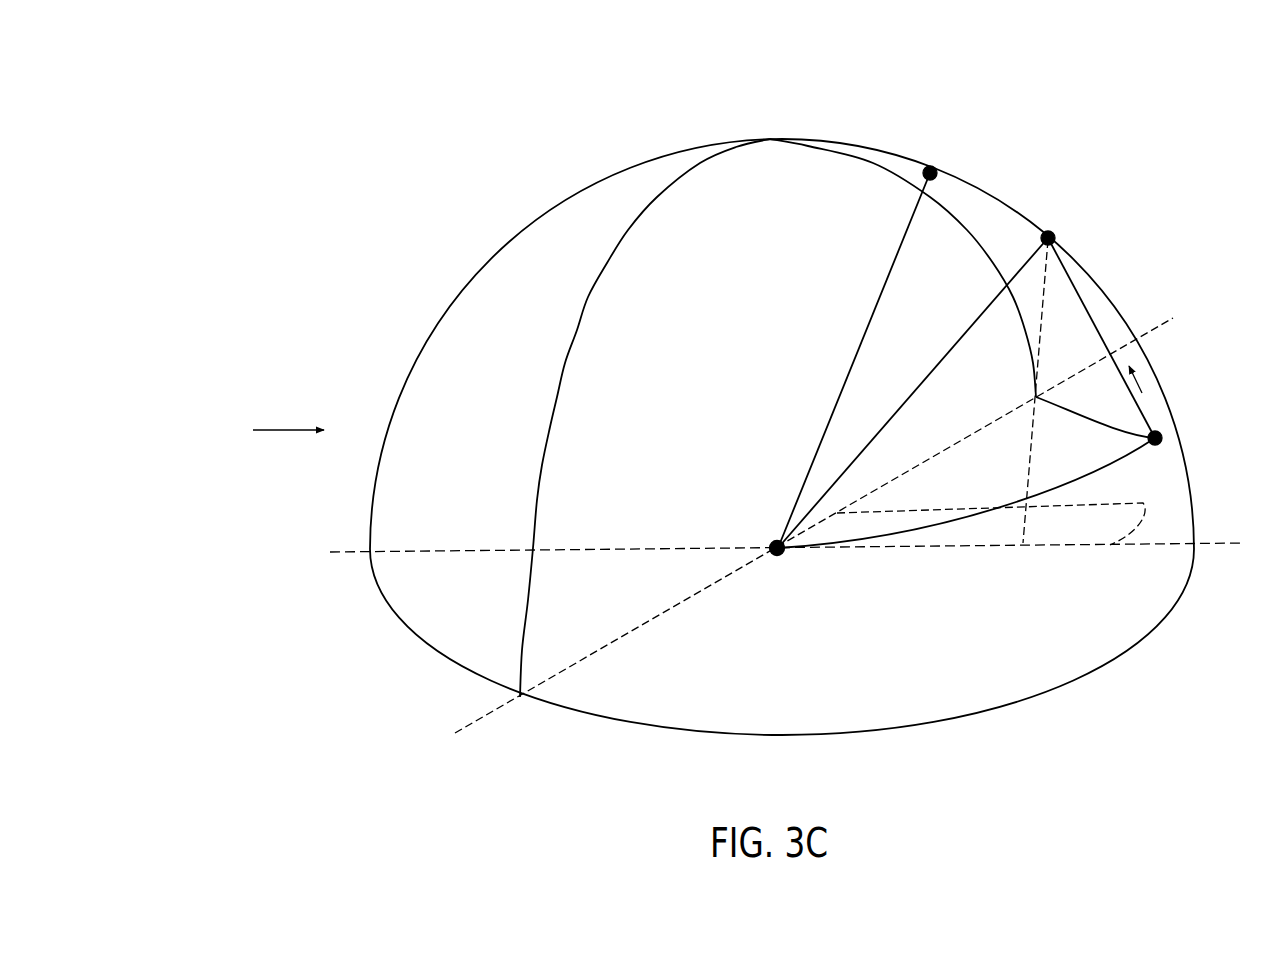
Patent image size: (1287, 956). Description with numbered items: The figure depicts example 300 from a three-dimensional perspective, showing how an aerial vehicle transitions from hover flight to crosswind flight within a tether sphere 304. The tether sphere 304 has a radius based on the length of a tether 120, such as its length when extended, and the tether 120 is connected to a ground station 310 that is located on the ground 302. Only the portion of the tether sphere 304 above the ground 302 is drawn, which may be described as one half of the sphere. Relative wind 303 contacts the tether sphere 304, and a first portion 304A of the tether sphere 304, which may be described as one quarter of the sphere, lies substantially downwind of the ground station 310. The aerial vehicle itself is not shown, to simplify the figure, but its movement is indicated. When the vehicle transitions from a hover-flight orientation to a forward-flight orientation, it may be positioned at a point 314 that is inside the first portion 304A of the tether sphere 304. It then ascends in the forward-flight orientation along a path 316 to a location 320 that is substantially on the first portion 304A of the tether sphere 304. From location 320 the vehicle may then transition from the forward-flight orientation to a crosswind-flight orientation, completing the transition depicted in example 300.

The example 300 is at (1014, 83).
The ground 302 is at (1228, 545).
The relative wind 303 is at (292, 425).
The tether sphere 304 is at (768, 139).
The first portion 304A is at (927, 710).
The ground station 310 is at (781, 540).
The point 314 is at (1160, 436).
The path 316 is at (1083, 302).
The location 320 is at (938, 170).
The tether 120 is at (887, 422).